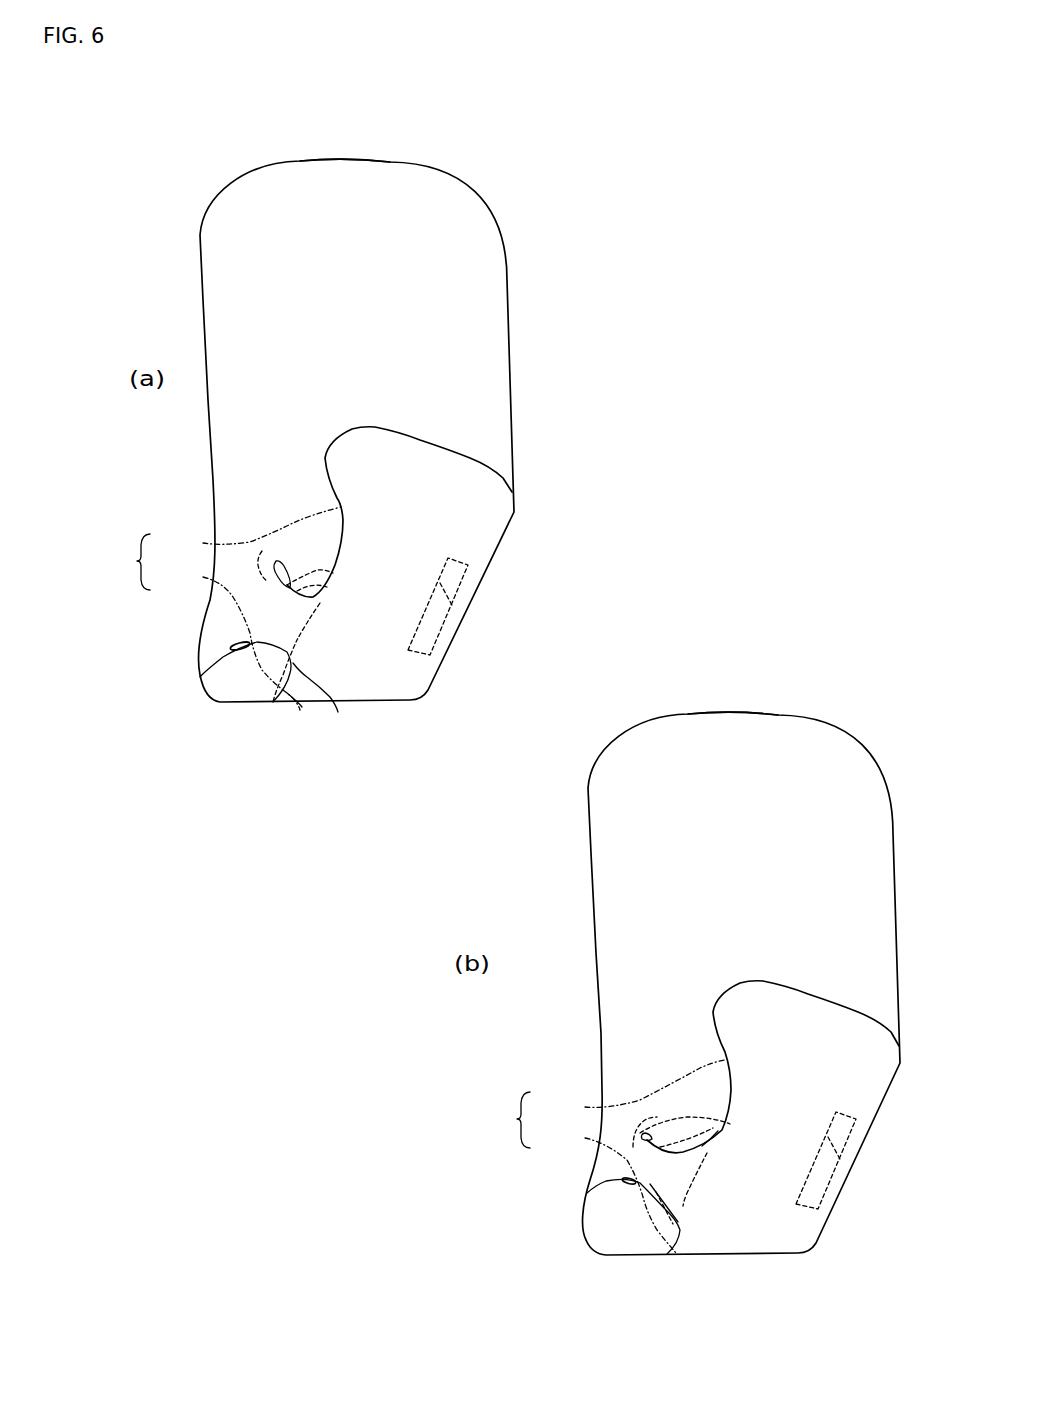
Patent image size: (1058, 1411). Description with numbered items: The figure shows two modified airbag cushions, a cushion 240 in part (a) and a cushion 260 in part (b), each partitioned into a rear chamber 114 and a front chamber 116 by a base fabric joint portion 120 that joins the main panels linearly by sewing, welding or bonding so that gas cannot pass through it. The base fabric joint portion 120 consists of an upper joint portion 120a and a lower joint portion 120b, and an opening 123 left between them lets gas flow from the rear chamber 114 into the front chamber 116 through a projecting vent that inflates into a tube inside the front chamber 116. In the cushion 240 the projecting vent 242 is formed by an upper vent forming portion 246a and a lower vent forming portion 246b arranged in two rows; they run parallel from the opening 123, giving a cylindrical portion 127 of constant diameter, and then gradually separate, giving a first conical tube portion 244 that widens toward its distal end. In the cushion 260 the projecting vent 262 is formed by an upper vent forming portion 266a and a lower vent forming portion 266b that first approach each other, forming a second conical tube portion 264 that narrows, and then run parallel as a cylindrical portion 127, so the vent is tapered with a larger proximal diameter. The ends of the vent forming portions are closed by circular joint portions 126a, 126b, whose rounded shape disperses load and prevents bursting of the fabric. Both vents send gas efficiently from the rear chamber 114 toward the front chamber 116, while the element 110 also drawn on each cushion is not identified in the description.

The cushion 240 is at (207, 177).
The cushion 260 is at (596, 731).
The front chamber 116 is at (331, 168).
The rear chamber 114 is at (490, 518).
The inflator 110 is at (467, 607).
The base fabric joint portion 120 is at (313, 841).
The upper joint portion 120a is at (436, 811).
The lower joint portion 120b is at (412, 910).
The opening 123 is at (315, 610).
The circular joint portion 126a is at (281, 561).
The circular joint portion 126b is at (200, 677).
The cylindrical portion 127 is at (333, 591).
The projecting vent 242 is at (338, 712).
The first conical tube portion 244 is at (265, 552).
The upper vent forming portion 246a is at (333, 574).
The lower vent forming portion 246b is at (300, 706).
The projecting vent 262 is at (678, 1222).
The second conical tube portion 264 is at (720, 1137).
The upper vent forming portion 266a is at (716, 1128).
The lower vent forming portion 266b is at (677, 1254).